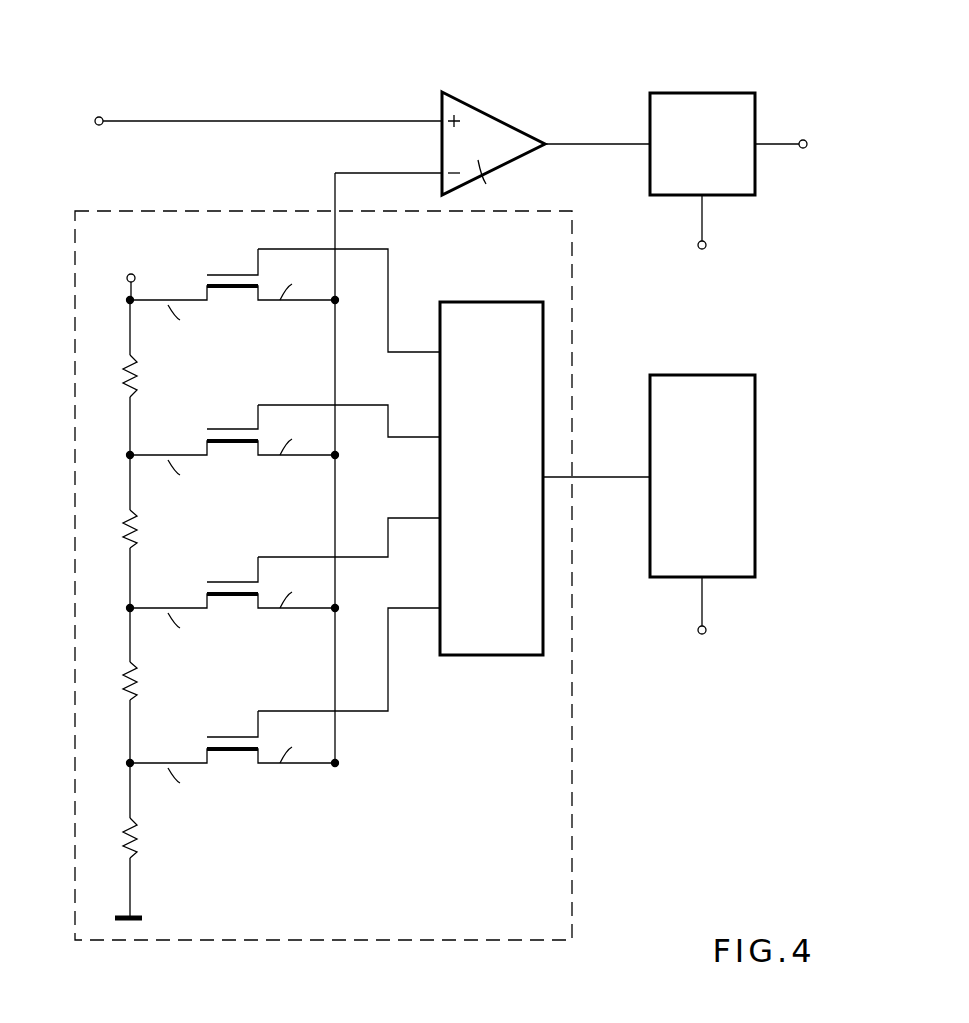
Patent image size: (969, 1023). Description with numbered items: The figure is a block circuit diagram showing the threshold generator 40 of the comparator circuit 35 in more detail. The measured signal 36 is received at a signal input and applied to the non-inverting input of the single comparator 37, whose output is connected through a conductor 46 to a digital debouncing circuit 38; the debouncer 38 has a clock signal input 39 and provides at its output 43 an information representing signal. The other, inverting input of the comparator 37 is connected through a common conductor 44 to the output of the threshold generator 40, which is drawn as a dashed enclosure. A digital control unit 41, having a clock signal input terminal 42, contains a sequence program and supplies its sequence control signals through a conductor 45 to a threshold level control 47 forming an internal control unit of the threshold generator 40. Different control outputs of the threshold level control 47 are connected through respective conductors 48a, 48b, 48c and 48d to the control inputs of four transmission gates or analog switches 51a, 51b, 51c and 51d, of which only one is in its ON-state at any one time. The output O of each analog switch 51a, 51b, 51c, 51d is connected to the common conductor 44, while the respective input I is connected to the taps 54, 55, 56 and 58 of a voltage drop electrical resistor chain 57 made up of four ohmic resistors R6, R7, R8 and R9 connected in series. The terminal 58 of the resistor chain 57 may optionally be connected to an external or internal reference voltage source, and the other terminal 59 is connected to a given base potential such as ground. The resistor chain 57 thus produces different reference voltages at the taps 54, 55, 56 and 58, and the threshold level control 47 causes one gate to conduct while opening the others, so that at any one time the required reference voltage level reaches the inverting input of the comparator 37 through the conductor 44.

The comparator circuit 35 is at (205, 80).
The measured signal 36 is at (103, 119).
The comparator 37 is at (490, 110).
The digital debouncing circuit 38 is at (715, 92).
The clock signal input 39 is at (698, 251).
The threshold generator 40 is at (572, 797).
The digital control unit 41 is at (755, 503).
The clock signal input terminal 42 is at (707, 630).
The output 43 is at (803, 138).
The conductor 44 is at (333, 180).
The conductor 45 is at (612, 480).
The conductor 46 is at (592, 138).
The threshold level control 47 is at (504, 658).
The conductor 48a is at (392, 256).
The conductor 48b is at (352, 403).
The conductor 48c is at (351, 558).
The conductor 48d is at (364, 714).
The analog switch 51a is at (227, 271).
The analog switch 51b is at (233, 417).
The analog switch 51c is at (228, 569).
The analog switch 51d is at (238, 724).
The tap 54 is at (133, 452).
The tap 55 is at (133, 605).
The tap 56 is at (133, 760).
The resistor chain 57 is at (112, 790).
The terminal 58 is at (134, 274).
The terminal 59 is at (136, 910).
The ohmic resistor R6 is at (142, 840).
The ohmic resistor R7 is at (140, 681).
The ohmic resistor R8 is at (142, 529).
The ohmic resistor R9 is at (142, 376).